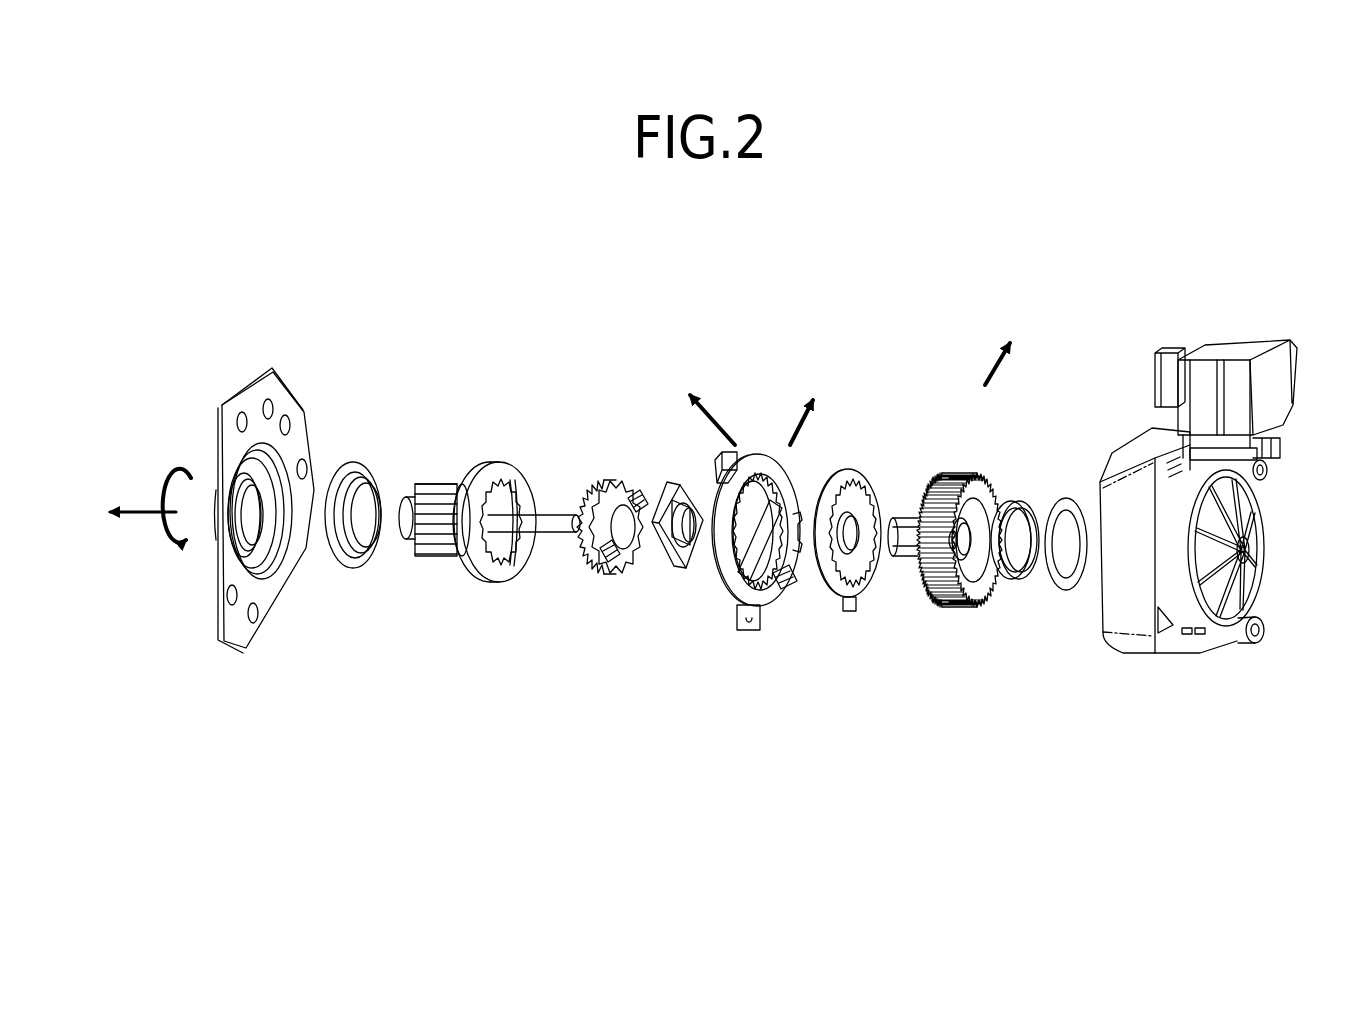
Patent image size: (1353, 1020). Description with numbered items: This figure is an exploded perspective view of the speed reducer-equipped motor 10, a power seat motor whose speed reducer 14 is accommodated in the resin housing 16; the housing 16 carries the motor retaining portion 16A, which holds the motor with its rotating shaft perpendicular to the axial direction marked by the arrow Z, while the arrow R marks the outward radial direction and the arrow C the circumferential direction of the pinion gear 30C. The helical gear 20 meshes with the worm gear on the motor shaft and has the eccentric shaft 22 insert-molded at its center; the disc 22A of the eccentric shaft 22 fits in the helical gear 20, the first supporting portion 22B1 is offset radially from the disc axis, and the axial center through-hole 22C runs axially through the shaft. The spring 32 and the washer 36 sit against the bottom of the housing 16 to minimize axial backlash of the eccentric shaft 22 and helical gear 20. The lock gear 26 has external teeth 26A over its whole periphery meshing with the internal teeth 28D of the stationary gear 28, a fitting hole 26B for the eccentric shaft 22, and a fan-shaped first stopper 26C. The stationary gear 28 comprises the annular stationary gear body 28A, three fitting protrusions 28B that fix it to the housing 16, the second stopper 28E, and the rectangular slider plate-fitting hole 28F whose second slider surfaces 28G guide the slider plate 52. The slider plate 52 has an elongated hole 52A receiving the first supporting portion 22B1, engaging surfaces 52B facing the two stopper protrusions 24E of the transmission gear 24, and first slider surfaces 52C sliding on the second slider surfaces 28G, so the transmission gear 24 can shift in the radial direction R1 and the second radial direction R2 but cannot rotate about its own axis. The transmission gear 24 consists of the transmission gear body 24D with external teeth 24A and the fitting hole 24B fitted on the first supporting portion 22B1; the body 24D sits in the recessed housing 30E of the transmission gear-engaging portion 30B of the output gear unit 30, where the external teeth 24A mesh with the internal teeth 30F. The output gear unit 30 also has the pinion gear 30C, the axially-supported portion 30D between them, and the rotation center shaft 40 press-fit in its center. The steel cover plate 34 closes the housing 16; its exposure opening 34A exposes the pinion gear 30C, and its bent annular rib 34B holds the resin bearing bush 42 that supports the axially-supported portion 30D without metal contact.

The speed reducer-equipped motor 10 is at (886, 263).
The speed reducer 14 is at (651, 350).
The housing 16 is at (1203, 509).
The motor retaining portion 16A is at (1290, 382).
The helical gear 20 is at (976, 564).
The eccentric shaft 22 is at (930, 528).
The disc 22A is at (966, 560).
The first supporting portion 22B1 is at (932, 466).
The axial center through-hole 22C is at (957, 535).
The transmission gear 24 is at (593, 522).
The external teeth 24A is at (602, 478).
The fitting hole 24B is at (607, 492).
The transmission gear body 24D is at (615, 523).
The stopper protrusions 24E is at (640, 492).
The lock gear 26 is at (854, 527).
The external teeth 26A is at (845, 580).
The fitting hole 26B is at (860, 475).
The first stopper 26C is at (858, 606).
The stationary gear 28 is at (762, 543).
The stationary gear body 28A is at (745, 610).
The fitting protrusions 28B is at (745, 635).
The internal teeth 28D is at (770, 478).
The second stopper 28E is at (790, 590).
The slider plate-fitting hole 28F is at (780, 520).
The second slider surfaces 28G is at (748, 600).
The output gear unit 30 is at (490, 511).
The transmission gear-engaging portion 30B is at (509, 465).
The pinion gear 30C is at (438, 488).
The axially-supported portion 30D is at (470, 560).
The recessed housing 30E is at (497, 570).
The internal teeth 30F is at (520, 565).
The spring 32 is at (1015, 503).
The cover plate 34 is at (267, 467).
The exposure opening 34A is at (262, 525).
The annular rib 34B is at (213, 505).
The washer 36 is at (1068, 498).
The rotation center shaft 40 is at (548, 535).
The bearing bush 42 is at (355, 570).
The slider plate 52 is at (667, 527).
The elongated hole 52A is at (680, 485).
The engaging surfaces 52B is at (675, 545).
The first slider surfaces 52C is at (672, 500).
The Z-direction Z is at (137, 518).
The C-direction C is at (178, 560).
The R-direction R is at (995, 368).
The radial direction R1 is at (808, 425).
The second radial direction R2 is at (708, 420).